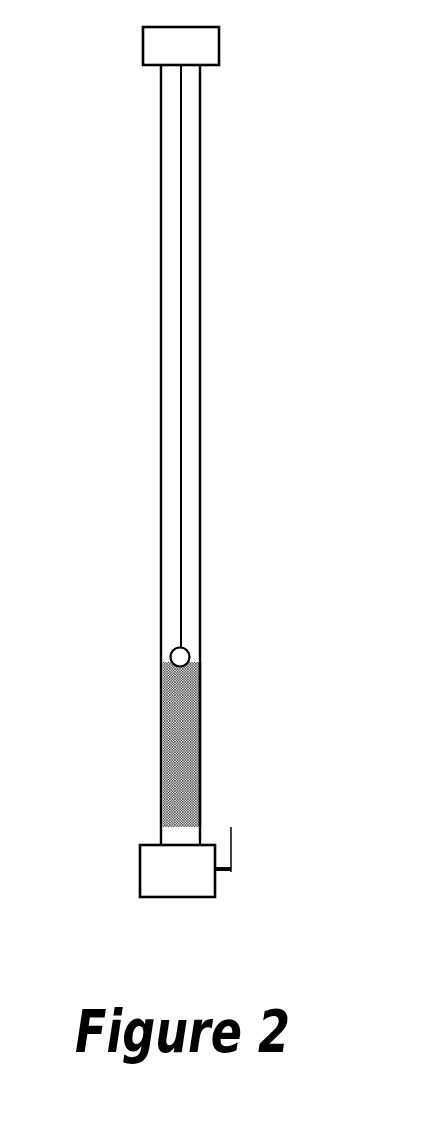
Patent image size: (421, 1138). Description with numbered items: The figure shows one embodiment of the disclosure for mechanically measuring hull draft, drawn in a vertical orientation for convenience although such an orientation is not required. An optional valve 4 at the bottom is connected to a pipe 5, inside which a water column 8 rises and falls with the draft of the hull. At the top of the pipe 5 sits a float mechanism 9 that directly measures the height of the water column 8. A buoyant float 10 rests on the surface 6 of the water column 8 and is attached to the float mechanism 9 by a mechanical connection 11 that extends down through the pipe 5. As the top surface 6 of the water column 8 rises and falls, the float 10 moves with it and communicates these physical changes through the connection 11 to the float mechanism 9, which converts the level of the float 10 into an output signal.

The valve 4 is at (153, 870).
The pipe 5 is at (160, 219).
The surface 6 is at (200, 673).
The water column 8 is at (168, 752).
The float mechanism 9 is at (219, 49).
The float 10 is at (187, 650).
The mechanical connection 11 is at (182, 445).